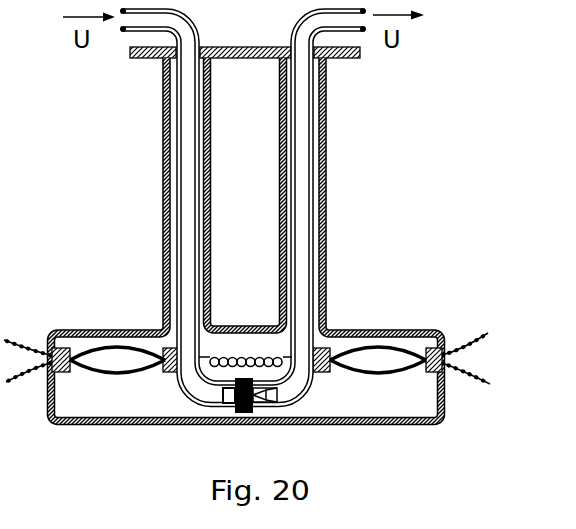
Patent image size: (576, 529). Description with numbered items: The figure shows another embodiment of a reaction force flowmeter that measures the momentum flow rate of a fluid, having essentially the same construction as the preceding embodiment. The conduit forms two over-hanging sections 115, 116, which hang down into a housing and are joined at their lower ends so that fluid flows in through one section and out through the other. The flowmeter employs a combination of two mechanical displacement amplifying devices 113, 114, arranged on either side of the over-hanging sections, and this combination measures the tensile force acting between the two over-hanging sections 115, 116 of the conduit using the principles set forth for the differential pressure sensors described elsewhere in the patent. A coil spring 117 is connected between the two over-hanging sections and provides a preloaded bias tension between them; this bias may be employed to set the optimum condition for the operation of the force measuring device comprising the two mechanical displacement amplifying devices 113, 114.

The mechanical displacement amplifying device 113 is at (128, 348).
The mechanical displacement amplifying device 114 is at (388, 348).
The over-hanging section of the conduit 115 is at (190, 229).
The over-hanging section of the conduit 116 is at (300, 228).
The coil spring 117 is at (232, 372).